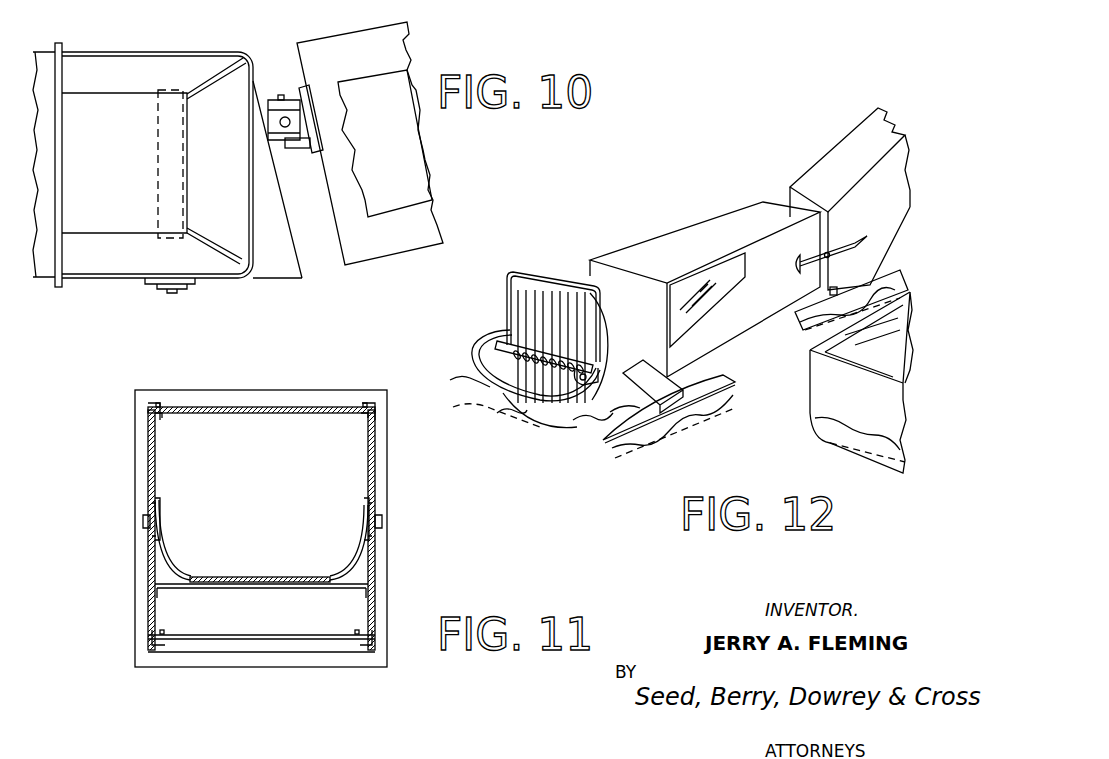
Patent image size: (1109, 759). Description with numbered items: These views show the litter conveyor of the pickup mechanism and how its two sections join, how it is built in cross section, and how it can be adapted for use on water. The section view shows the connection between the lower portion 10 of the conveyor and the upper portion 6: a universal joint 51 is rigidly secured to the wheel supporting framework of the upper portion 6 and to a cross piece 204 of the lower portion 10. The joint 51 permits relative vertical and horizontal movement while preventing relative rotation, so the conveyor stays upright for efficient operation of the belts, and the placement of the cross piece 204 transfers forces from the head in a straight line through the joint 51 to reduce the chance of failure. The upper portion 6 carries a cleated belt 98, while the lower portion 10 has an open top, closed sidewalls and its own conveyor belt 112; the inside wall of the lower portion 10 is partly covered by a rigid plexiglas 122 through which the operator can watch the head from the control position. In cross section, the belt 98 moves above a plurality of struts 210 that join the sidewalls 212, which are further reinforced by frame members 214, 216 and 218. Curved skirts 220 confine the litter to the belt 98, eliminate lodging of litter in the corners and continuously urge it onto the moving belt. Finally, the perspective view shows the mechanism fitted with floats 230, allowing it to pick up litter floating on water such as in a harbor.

In FIG. 10, the upper portion of the conveyor 6 is at (144, 303).
In FIG. 10, the cleated belt 98 is at (138, 187).
In FIG. 11, the cleated belt 98 is at (275, 577).
In FIG. 10, the universal joint 51 is at (308, 153).
In FIG. 10, the cross piece 204 is at (302, 266).
In FIG. 10, the lower portion of the conveyor 10 is at (381, 157).
In FIG. 10, the conveyor belt 112 is at (394, 132).
In FIG. 11, the frame member 216 is at (146, 446).
In FIG. 11, the frame member 214 is at (147, 528).
In FIG. 11, the sidewalls 212 is at (152, 570).
In FIG. 11, the curved skirts 220 is at (176, 562).
In FIG. 11, the struts 210 is at (348, 583).
In FIG. 11, the frame member 218 is at (268, 646).
In FIG. 12, the rigid plexiglas 122 is at (713, 295).
In FIG. 12, the floats 230 is at (468, 382).